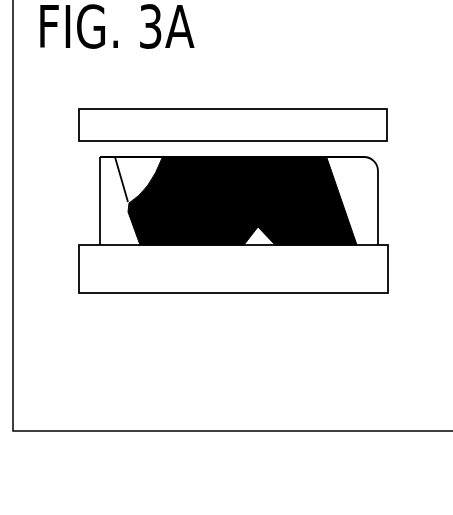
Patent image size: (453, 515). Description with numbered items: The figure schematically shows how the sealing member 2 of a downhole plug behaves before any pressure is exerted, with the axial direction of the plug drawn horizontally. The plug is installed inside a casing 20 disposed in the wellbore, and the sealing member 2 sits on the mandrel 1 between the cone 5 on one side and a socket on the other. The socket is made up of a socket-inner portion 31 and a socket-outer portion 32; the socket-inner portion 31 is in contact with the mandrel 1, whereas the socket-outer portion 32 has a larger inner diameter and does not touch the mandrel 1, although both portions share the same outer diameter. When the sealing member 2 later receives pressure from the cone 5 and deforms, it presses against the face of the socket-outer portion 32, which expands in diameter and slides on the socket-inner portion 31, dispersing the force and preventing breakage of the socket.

The mandrel 1 is at (370, 290).
The sealing member 2 is at (158, 220).
The cone 5 is at (371, 188).
The casing 20 is at (362, 108).
The socket-inner portion 31 is at (115, 222).
The socket-outer portion 32 is at (135, 175).